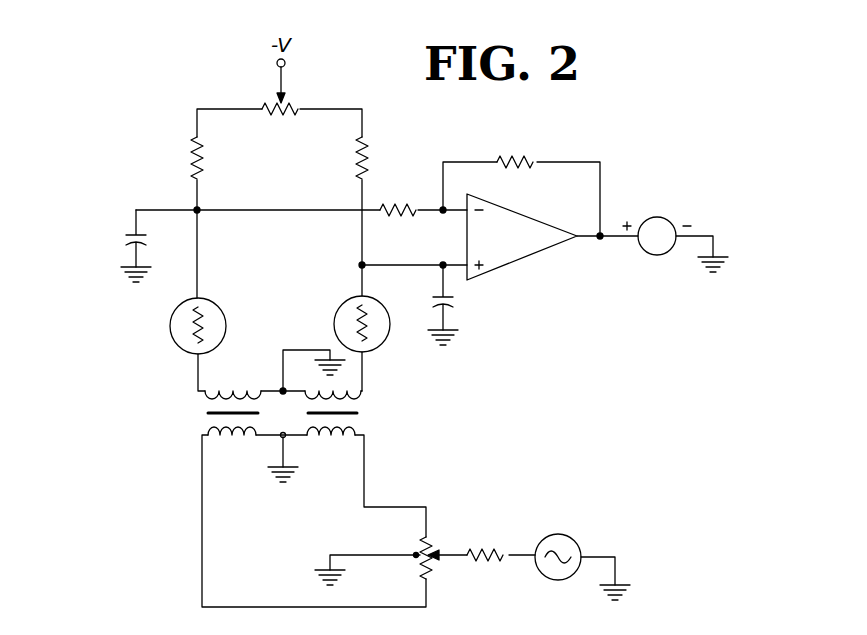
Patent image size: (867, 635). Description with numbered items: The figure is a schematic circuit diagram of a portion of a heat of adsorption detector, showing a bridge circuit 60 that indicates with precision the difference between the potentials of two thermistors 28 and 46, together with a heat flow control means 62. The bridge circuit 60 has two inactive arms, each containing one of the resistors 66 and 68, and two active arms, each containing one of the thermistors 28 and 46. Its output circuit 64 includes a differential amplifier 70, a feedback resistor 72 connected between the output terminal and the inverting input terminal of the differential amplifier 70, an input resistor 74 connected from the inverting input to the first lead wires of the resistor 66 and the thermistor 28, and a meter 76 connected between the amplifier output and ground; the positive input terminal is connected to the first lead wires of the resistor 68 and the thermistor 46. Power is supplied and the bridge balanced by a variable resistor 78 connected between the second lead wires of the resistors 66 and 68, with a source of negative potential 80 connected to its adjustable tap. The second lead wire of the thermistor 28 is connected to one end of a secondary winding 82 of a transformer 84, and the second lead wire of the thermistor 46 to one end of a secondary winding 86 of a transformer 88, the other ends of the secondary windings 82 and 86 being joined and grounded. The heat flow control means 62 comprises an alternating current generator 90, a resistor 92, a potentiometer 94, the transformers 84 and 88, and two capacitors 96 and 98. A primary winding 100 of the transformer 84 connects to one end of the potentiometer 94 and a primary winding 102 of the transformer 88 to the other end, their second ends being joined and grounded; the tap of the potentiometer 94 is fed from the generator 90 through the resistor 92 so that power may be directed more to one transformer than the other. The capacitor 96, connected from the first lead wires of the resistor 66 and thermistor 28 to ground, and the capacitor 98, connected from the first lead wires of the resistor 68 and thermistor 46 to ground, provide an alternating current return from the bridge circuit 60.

The thermistor 28 is at (171, 321).
The thermistor 46 is at (345, 301).
The bridge circuit 60 is at (258, 146).
The heat flow control means 62 is at (278, 534).
The output circuit 64 is at (580, 157).
The resistor 66 is at (194, 151).
The resistor 68 is at (366, 152).
The differential amplifier 70 is at (527, 216).
The feedback resistor 72 is at (310, 209).
The input resistor 74 is at (404, 204).
The meter 76 is at (672, 222).
The variable resistor 78 is at (296, 104).
The source of negative potential 80 is at (276, 63).
The secondary winding 82 is at (205, 392).
The transformer 84 is at (205, 413).
The secondary winding 86 is at (366, 391).
The transformer 88 is at (357, 413).
The alternating current generator 90 is at (573, 539).
The resistor 92 is at (495, 545).
The potentiometer 94 is at (418, 578).
The capacitor 96 is at (126, 241).
The capacitor 98 is at (453, 301).
The primary winding 100 is at (206, 432).
The primary winding 102 is at (358, 438).